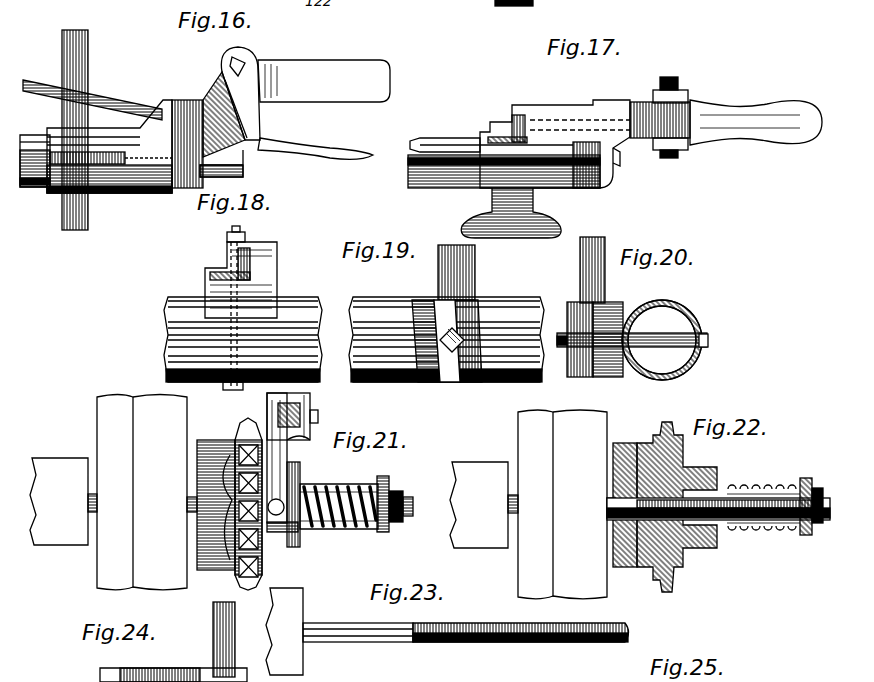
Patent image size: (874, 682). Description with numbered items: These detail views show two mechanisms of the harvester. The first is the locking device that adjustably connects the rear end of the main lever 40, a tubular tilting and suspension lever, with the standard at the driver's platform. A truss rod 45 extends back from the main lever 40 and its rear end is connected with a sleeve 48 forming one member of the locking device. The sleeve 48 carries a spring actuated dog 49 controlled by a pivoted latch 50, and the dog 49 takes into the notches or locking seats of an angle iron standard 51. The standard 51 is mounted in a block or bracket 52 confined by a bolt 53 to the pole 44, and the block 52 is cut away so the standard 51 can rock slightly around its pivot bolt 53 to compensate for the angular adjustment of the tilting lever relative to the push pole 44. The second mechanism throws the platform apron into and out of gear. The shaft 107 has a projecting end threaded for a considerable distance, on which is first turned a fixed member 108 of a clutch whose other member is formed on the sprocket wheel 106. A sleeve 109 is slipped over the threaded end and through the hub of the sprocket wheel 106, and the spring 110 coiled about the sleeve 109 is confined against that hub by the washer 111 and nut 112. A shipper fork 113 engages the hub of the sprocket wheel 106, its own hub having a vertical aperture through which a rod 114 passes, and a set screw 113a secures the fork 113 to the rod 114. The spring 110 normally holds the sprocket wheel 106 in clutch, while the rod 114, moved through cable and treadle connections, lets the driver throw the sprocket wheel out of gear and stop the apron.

In FIG. 16, the main lever 40 is at (30, 187).
In FIG. 17, the main lever 40 is at (433, 142).
In FIG. 18, the pole 44 is at (170, 300).
In FIG. 19, the pole 44 is at (507, 300).
In FIG. 20, the pole 44 is at (694, 301).
In FIG. 16, the truss rod 45 is at (100, 104).
In FIG. 17, the truss rod 45 is at (410, 172).
In FIG. 16, the sleeve 48 is at (110, 143).
In FIG. 17, the sleeve 48 is at (533, 147).
In FIG. 16, the spring actuated dog 49 is at (200, 177).
In FIG. 16, the pivoted latch 50 is at (330, 150).
In FIG. 17, the pivoted latch 50 is at (710, 140).
In FIG. 16, the angle iron standard 51 is at (62, 62).
In FIG. 17, the angle iron standard 51 is at (492, 130).
In FIG. 18, the angle iron standard 51 is at (225, 272).
In FIG. 19, the angle iron standard 51 is at (470, 270).
In FIG. 20, the angle iron standard 51 is at (590, 262).
In FIG. 18, the block or bracket 52 is at (278, 278).
In FIG. 19, the block or bracket 52 is at (450, 382).
In FIG. 20, the block or bracket 52 is at (615, 367).
In FIG. 18, the bolt 53 is at (235, 390).
In FIG. 19, the bolt 53 is at (447, 332).
In FIG. 20, the bolt 53 is at (660, 347).
In FIG. 21, the sprocket wheel 106 is at (263, 562).
In FIG. 22, the sprocket wheel 106 is at (672, 563).
In FIG. 21, the shaft 107 is at (182, 508).
In FIG. 23, the shaft 107 is at (340, 642).
In FIG. 21, the fixed member of clutch 108 is at (215, 570).
In FIG. 22, the fixed member of clutch 108 is at (627, 567).
In FIG. 21, the sleeve 109 is at (320, 529).
In FIG. 22, the sleeve 109 is at (754, 530).
In FIG. 21, the spring 110 is at (322, 487).
In FIG. 22, the spring 110 is at (760, 484).
In FIG. 21, the washer 111 is at (384, 476).
In FIG. 22, the washer 111 is at (806, 478).
In FIG. 21, the nut 112 is at (401, 491).
In FIG. 22, the nut 112 is at (817, 494).
In FIG. 21, the shipper fork 113 is at (280, 485).
In FIG. 21, the set screw 113a is at (314, 415).
In FIG. 21, the rod 114 is at (300, 408).
In FIG. 24, the rod 114 is at (235, 645).